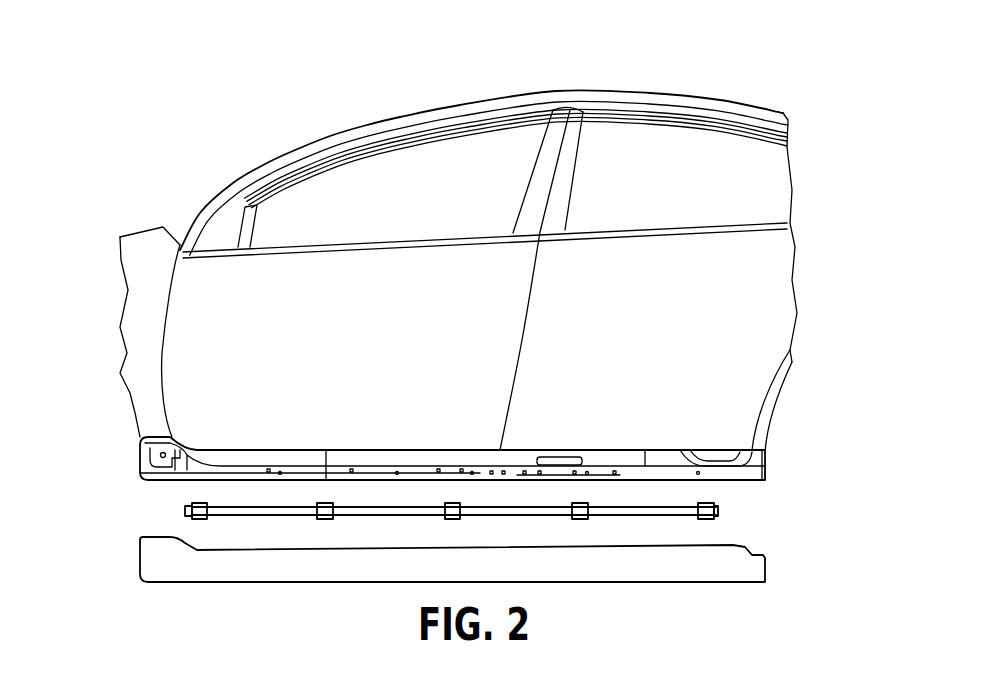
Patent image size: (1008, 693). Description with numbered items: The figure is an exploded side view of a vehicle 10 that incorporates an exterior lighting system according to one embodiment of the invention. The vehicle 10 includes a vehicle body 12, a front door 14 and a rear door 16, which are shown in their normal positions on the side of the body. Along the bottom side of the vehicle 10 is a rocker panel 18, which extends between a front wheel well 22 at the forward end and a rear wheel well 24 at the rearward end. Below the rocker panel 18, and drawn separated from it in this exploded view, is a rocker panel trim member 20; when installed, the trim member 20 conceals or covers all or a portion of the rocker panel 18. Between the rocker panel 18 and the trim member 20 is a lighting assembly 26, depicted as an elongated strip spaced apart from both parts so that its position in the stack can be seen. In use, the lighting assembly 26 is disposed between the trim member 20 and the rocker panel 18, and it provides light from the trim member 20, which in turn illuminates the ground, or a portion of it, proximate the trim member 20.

The vehicle 10 is at (219, 102).
The vehicle body 12 is at (423, 105).
The front door 14 is at (363, 353).
The rear door 16 is at (670, 363).
The rocker panel 18 is at (767, 463).
The rocker panel trim member 20 is at (767, 563).
The front wheel well 22 is at (130, 393).
The rear wheel well 24 is at (790, 362).
The lighting assembly 26 is at (717, 507).